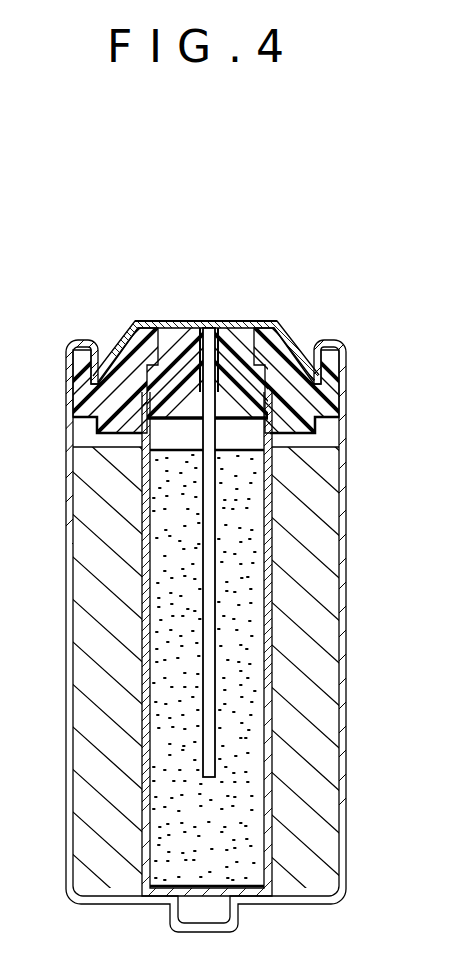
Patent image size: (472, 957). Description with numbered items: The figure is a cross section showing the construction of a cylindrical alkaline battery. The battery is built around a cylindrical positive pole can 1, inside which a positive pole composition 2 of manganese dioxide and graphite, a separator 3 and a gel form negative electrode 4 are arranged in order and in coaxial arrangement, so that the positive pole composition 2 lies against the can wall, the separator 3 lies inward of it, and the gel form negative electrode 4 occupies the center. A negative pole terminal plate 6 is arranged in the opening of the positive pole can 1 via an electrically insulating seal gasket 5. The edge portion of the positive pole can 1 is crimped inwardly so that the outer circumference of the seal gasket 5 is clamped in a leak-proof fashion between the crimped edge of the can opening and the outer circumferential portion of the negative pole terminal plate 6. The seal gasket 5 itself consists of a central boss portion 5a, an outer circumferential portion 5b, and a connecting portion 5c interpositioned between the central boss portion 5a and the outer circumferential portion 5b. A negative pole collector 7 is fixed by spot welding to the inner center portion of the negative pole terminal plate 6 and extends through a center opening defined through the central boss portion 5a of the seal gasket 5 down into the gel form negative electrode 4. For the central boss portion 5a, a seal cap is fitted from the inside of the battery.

The positive pole can 1 is at (345, 620).
The positive pole composition 2 is at (313, 717).
The separator 3 is at (267, 543).
The gel form negative electrode 4 is at (243, 596).
The seal gasket 5 is at (236, 356).
The central boss portion 5a is at (158, 363).
The outer circumferential portion 5b is at (97, 353).
The connecting portion 5c is at (120, 362).
The negative pole terminal plate 6 is at (192, 321).
The negative pole collector 7 is at (207, 515).